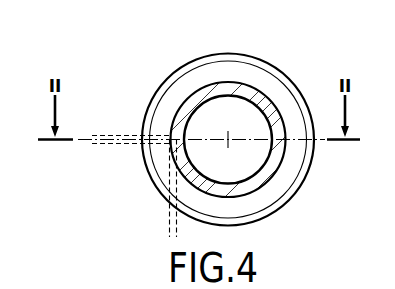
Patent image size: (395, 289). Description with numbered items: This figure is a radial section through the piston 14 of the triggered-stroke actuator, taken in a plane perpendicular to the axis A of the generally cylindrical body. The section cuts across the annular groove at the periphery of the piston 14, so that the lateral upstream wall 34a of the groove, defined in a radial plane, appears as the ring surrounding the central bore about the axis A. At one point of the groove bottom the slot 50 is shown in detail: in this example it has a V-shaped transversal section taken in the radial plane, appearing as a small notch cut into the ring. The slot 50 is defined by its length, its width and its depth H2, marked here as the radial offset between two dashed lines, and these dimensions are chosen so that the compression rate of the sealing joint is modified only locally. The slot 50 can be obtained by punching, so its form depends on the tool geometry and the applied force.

The piston 14 is at (231, 54).
The lateral upstream wall 34a is at (277, 92).
The slot 50 is at (171, 140).
The axis A is at (228, 140).
The depth of the slot H2 is at (194, 231).